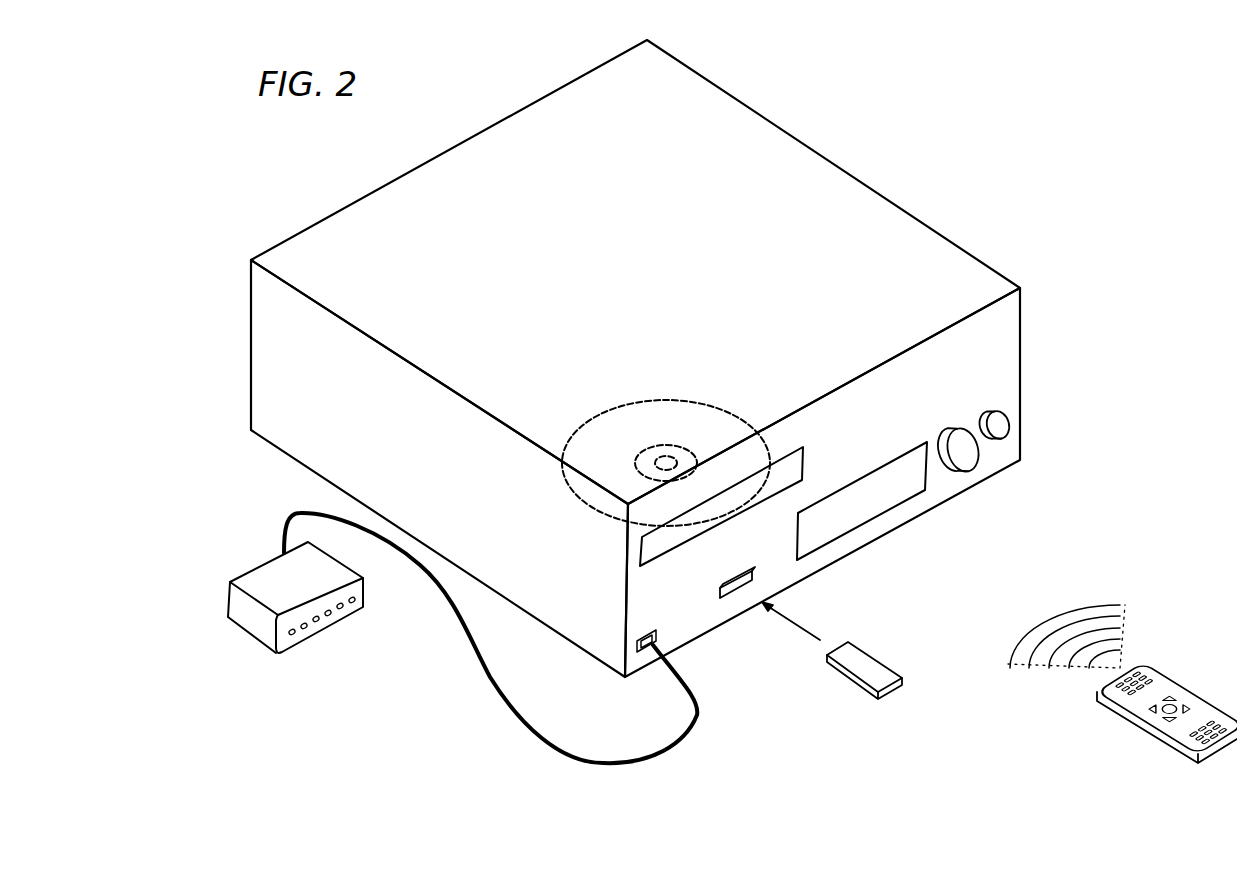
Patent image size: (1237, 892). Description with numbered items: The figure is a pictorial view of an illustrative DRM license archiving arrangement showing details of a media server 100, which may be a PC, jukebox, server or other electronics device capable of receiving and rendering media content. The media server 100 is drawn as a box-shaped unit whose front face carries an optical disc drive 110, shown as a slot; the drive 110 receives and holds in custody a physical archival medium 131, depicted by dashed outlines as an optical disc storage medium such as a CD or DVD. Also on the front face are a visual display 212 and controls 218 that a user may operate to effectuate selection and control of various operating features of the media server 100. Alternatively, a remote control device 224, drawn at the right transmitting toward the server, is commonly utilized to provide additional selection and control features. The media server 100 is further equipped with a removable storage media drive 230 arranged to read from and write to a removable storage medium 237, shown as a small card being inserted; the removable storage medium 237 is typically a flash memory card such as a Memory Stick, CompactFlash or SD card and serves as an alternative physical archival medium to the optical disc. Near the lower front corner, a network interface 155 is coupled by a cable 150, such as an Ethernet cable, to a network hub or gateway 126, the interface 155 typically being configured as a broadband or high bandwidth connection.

The media server 100 is at (905, 131).
The optical disc drive 110 is at (647, 549).
The physical archival medium 131 is at (563, 479).
The visual display 212 is at (893, 503).
The controls 218 is at (962, 472).
The removable storage media drive 230 is at (735, 573).
The removable storage medium 237 is at (852, 688).
The remote control device 224 is at (1110, 718).
The network hub or gateway 126 is at (248, 643).
The cable 150 is at (490, 680).
The network interface 155 is at (632, 660).